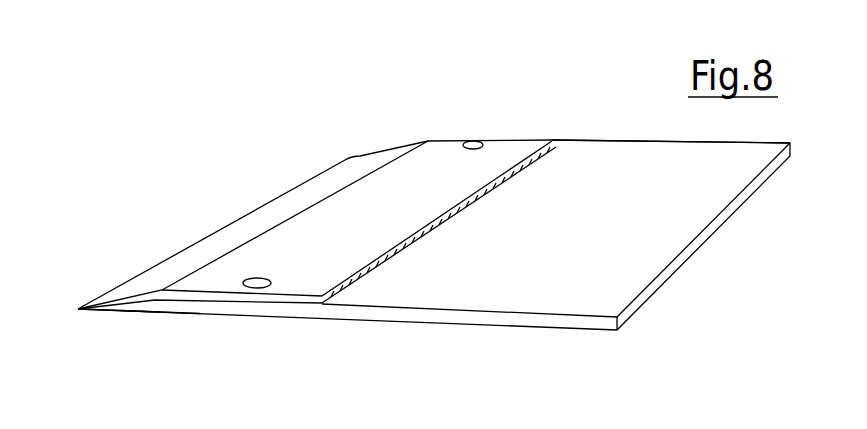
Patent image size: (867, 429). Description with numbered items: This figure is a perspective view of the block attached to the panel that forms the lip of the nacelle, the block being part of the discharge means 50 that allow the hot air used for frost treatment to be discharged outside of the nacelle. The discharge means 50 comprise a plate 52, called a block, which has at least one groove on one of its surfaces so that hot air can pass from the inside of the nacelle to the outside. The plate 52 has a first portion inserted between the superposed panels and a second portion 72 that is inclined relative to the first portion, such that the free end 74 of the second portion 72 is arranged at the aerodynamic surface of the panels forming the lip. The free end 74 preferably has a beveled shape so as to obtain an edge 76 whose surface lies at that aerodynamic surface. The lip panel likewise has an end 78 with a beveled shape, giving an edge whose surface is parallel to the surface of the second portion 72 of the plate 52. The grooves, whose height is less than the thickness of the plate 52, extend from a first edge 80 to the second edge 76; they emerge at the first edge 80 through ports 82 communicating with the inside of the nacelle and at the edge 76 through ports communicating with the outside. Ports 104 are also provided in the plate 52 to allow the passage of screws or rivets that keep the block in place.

The discharge means 50 is at (304, 328).
The plate 52 is at (295, 210).
The second portion 72 is at (230, 238).
The free end 74 is at (78, 309).
The edge 76 is at (100, 313).
The end 78 is at (145, 311).
The first edge 80 is at (552, 142).
The ports 82 is at (440, 224).
The ports 104 is at (257, 289).